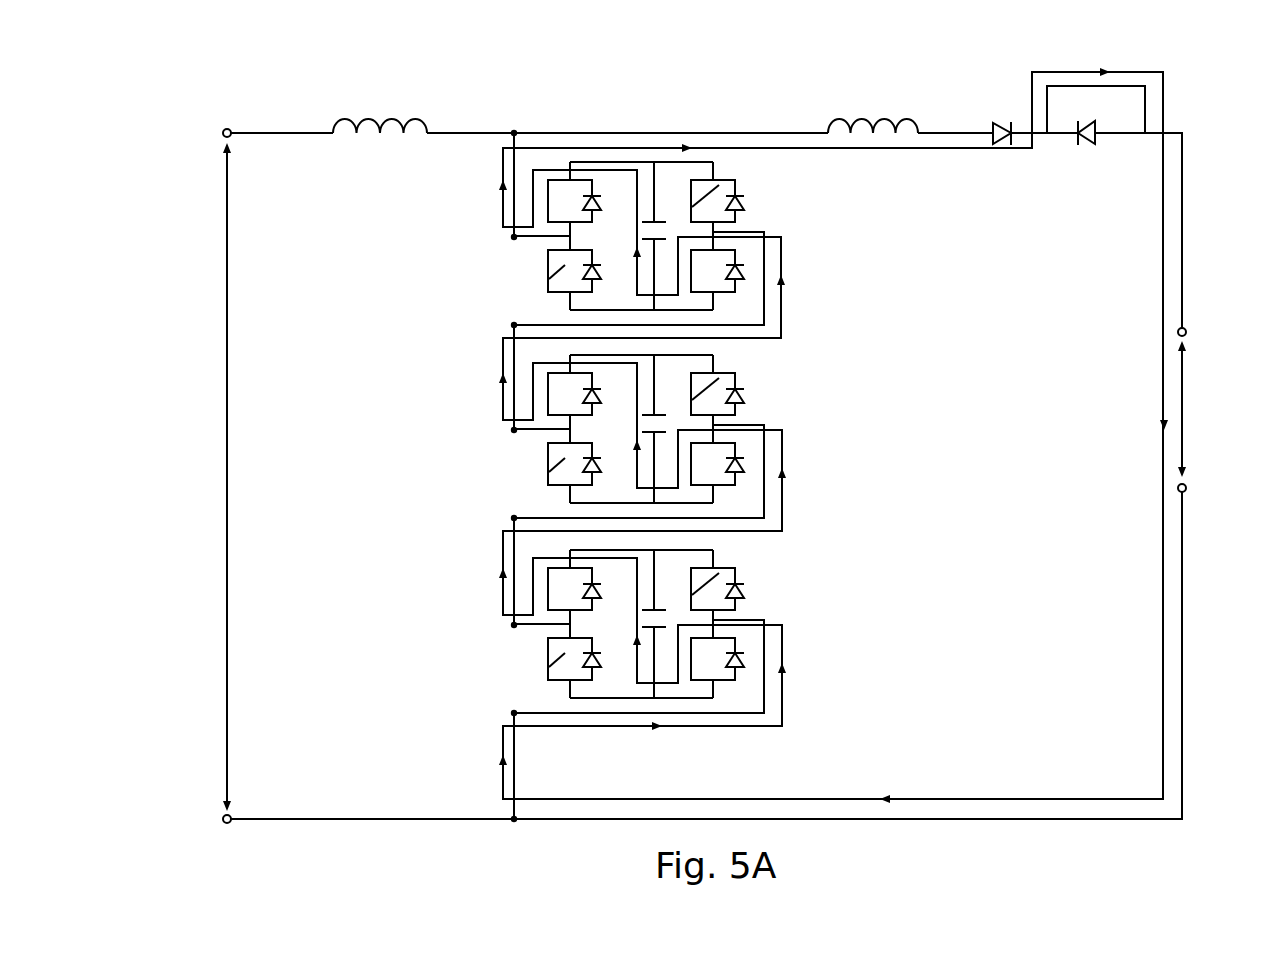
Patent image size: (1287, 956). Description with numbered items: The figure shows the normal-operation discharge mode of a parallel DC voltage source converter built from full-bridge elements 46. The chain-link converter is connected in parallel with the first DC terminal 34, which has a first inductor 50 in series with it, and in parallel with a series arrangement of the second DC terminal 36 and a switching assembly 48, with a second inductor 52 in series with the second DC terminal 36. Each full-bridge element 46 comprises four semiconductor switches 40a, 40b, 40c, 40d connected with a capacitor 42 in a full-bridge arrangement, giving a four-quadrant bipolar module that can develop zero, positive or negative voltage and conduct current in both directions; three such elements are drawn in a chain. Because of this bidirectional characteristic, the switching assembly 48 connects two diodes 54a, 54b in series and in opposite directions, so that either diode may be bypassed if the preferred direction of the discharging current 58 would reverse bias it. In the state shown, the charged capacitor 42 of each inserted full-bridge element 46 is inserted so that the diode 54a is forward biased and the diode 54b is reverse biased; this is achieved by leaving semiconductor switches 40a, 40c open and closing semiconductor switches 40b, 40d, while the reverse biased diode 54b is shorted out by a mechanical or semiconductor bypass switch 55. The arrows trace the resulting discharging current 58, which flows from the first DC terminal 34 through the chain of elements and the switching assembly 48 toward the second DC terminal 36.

The first DC terminal 34 is at (200, 468).
The second DC terminal 36 is at (1217, 407).
The semiconductor switch 40a is at (719, 185).
The semiconductor switch 40b is at (548, 198).
The semiconductor switch 40c is at (548, 278).
The semiconductor switch 40d is at (722, 288).
The capacitor 42 is at (658, 222).
The full-bridge element 46 is at (808, 366).
The switching assembly 48 is at (1062, 56).
The first inductor 50 is at (380, 117).
The second inductor 52 is at (873, 117).
The diode 54a is at (1002, 120).
The diode 54b is at (1087, 147).
The bypass switch 55 is at (1147, 108).
The discharging current 58 is at (1155, 410).